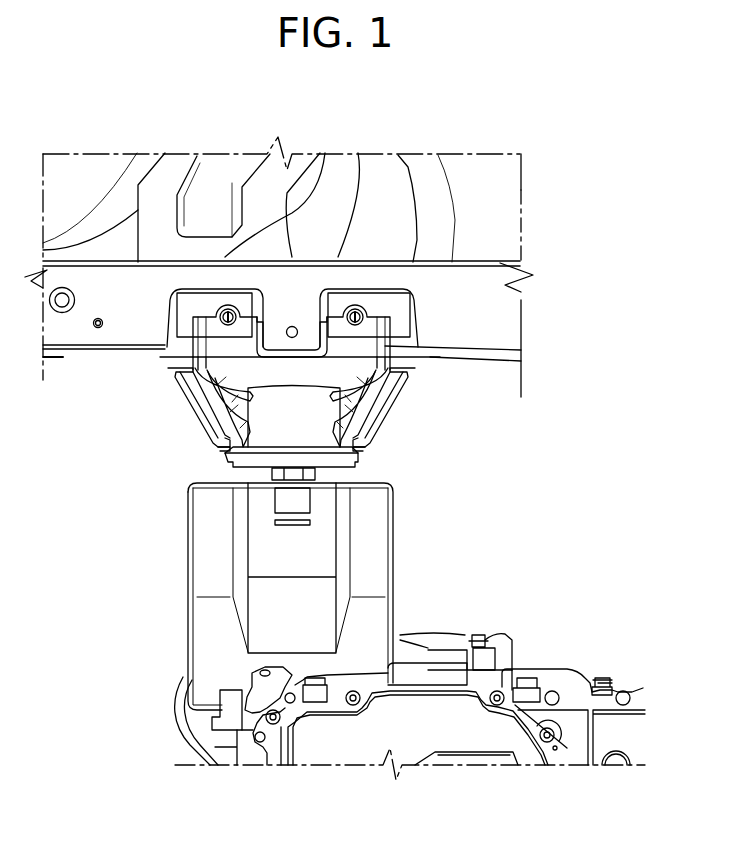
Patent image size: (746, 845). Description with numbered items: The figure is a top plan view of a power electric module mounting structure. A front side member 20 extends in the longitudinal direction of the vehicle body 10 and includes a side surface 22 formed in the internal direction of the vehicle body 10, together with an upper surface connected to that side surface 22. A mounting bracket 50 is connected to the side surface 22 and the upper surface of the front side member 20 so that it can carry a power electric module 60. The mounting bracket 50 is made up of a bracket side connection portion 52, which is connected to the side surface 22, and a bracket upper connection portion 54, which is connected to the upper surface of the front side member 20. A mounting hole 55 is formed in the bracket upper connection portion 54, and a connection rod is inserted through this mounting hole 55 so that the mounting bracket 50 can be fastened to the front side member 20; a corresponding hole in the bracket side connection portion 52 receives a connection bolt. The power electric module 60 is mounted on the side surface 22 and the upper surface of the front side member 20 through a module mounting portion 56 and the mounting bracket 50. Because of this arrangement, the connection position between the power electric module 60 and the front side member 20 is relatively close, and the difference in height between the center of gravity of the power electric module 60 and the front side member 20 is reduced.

The vehicle body 10 is at (550, 198).
The front side member 20 is at (532, 302).
The side surface 22 is at (512, 335).
The mounting bracket 50 is at (397, 420).
The bracket side connection portion 52 is at (407, 385).
The bracket upper connection portion 54 is at (230, 347).
The mounting hole 55 is at (228, 312).
The module mounting portion 56 is at (393, 548).
The power electric module 60 is at (484, 622).